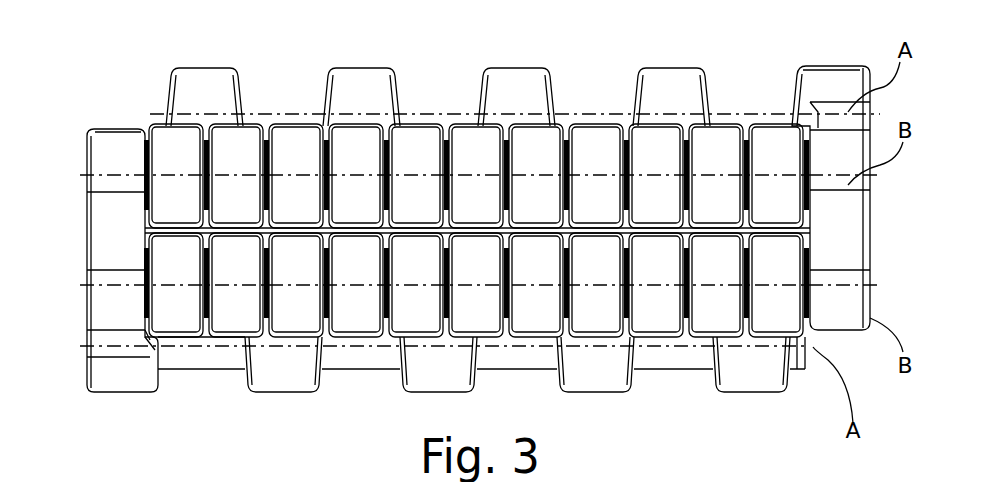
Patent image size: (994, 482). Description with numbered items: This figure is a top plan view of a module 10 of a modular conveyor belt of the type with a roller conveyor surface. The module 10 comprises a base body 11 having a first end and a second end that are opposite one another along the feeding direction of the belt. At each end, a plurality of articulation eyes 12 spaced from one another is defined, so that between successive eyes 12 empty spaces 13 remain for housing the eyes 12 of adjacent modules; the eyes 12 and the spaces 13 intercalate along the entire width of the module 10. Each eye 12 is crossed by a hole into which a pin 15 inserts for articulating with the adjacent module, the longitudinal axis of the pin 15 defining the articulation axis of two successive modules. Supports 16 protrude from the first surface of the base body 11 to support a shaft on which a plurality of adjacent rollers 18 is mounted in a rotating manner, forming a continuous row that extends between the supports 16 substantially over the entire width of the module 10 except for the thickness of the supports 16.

The module 10 is at (107, 77).
The base body 11 is at (118, 398).
The articulation eye 12 is at (510, 78).
The empty space 13 is at (590, 100).
The pin 15 is at (670, 358).
The support 16 is at (98, 237).
The roller 18 is at (770, 143).